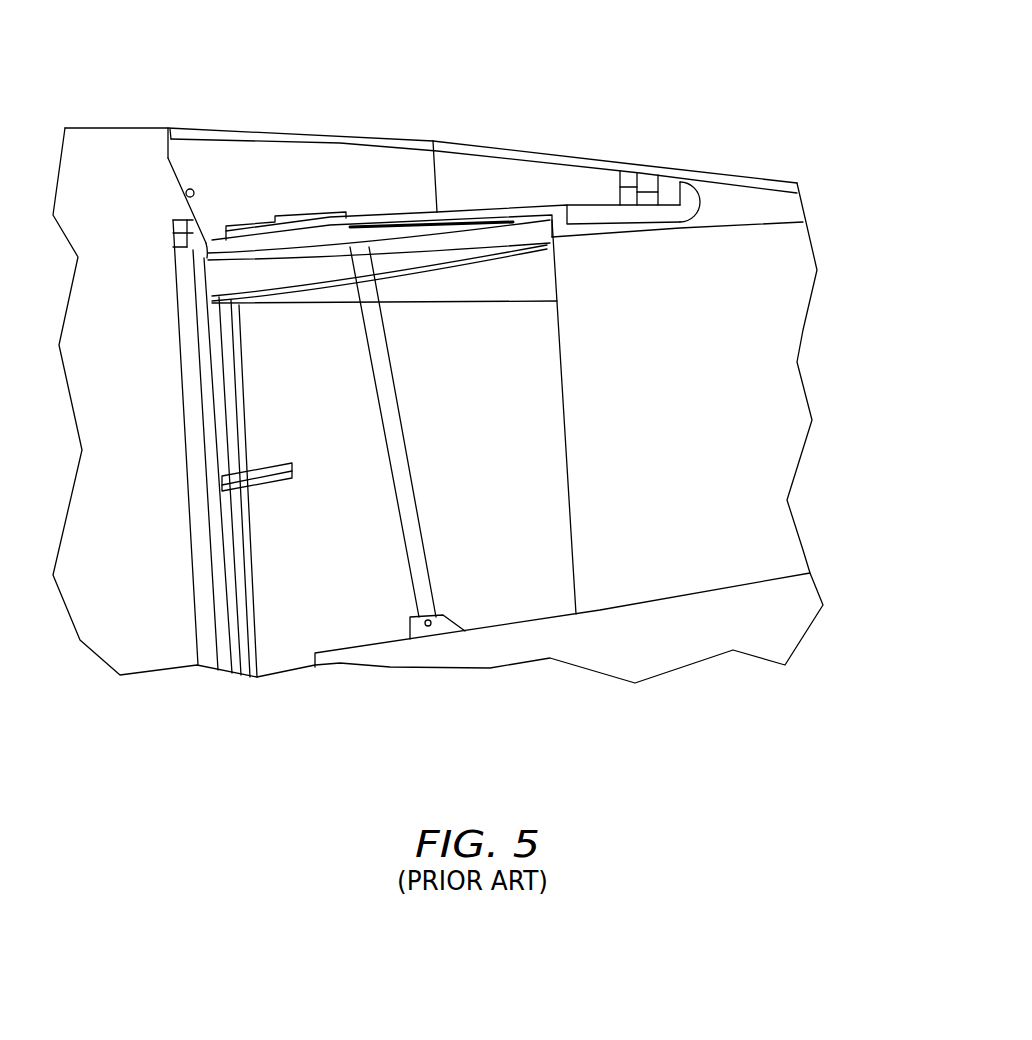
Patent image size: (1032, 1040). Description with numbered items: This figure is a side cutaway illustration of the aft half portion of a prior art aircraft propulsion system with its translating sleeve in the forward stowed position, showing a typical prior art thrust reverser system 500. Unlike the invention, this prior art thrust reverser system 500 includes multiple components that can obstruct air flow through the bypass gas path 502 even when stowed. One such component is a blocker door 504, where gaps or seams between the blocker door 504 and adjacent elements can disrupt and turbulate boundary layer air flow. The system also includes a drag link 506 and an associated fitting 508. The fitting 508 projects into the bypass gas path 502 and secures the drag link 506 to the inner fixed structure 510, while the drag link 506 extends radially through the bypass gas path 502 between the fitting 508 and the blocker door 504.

The prior art thrust reverser system 500 is at (438, 346).
The bypass gas path 502 is at (773, 402).
The blocker door 504 is at (388, 222).
The drag link 506 is at (405, 546).
The fitting 508 is at (409, 630).
The inner fixed structure 510 is at (655, 652).